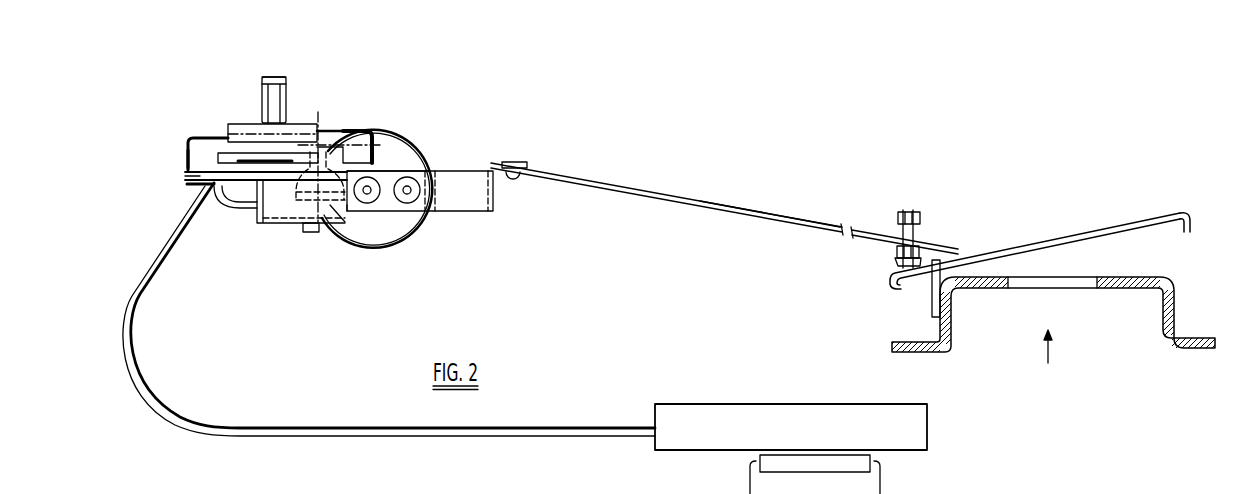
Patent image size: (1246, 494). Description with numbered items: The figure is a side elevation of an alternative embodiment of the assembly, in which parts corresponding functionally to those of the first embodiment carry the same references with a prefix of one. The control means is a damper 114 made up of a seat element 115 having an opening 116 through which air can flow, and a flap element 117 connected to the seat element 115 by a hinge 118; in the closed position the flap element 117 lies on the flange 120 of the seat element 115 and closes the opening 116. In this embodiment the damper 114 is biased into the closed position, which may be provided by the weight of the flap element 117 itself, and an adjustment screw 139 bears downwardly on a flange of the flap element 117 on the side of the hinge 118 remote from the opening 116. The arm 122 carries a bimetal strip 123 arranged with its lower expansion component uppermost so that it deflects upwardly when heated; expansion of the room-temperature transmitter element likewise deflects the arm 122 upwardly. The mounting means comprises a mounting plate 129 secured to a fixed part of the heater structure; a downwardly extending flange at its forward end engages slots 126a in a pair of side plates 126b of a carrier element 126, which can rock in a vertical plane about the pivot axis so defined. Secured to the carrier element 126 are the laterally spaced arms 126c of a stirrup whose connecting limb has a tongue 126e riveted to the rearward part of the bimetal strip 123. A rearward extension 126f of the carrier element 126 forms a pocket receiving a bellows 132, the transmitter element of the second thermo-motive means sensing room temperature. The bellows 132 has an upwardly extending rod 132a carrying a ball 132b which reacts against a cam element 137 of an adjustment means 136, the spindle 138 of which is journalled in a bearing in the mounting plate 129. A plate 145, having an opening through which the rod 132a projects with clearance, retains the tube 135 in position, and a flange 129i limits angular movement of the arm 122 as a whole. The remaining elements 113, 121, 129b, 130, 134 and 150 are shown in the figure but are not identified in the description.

The direction arrow 113 is at (1050, 352).
The damper 114 is at (1074, 224).
The seat element 115 is at (1176, 308).
The opening 116 is at (1066, 283).
The flap element 117 is at (1147, 230).
The hinge 118 is at (932, 292).
The flange 120 is at (985, 290).
The bracket hook 121 is at (342, 126).
The arm 122 is at (713, 193).
The bimetal strip 123 is at (807, 218).
The carrier element 126 is at (303, 250).
The slots 126a is at (428, 158).
The side plates 126b is at (333, 232).
The arms 126c is at (490, 204).
The tongue 126e is at (533, 184).
The rearward extension 126f is at (236, 208).
The mounting plate 129 is at (189, 137).
The bracket arm 129b is at (388, 150).
The flange 129i is at (186, 150).
The wheel 130 is at (408, 244).
The bellows 132 is at (296, 224).
The rod 132a is at (367, 232).
The ball 132b is at (332, 110).
The control box 134 is at (679, 403).
The tube 135 is at (233, 203).
The adjustment means 136 is at (258, 76).
The cam element 137 is at (250, 150).
The spindle 138 is at (286, 79).
The adjustment screw 139 is at (920, 211).
The plate 145 is at (185, 182).
The connector 150 is at (805, 474).